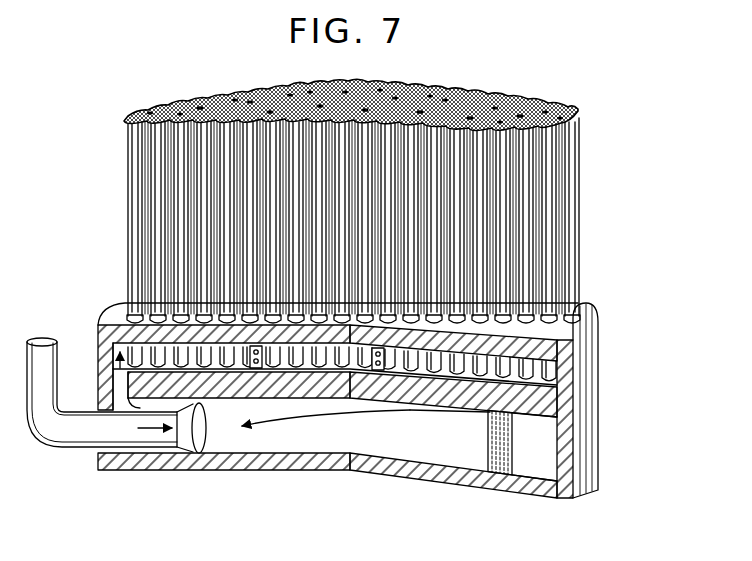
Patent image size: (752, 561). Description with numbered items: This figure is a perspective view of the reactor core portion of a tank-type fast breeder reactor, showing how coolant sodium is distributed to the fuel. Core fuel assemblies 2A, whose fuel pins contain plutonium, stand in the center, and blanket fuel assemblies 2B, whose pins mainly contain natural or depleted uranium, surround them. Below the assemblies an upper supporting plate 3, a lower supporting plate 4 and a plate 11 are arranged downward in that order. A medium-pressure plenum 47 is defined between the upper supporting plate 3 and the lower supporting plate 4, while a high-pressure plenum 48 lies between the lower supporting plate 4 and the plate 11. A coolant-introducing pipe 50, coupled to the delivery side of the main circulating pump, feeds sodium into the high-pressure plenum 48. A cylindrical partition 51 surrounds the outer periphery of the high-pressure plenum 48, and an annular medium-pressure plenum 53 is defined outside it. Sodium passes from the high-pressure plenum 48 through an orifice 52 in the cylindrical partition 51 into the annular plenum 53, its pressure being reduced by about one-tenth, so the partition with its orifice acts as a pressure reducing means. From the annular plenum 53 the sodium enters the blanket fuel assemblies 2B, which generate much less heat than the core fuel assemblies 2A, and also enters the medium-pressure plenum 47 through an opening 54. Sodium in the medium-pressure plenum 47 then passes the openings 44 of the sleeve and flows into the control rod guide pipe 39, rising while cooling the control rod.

The core fuel assembly 2A is at (228, 208).
The blanket fuel assembly 2B is at (485, 222).
The control rod guide pipe 39 is at (380, 248).
The upper supporting plate 3 is at (115, 312).
The lower supporting plate 4 is at (560, 404).
The opening 54 is at (122, 378).
The coolant-introducing pipe 50 is at (70, 447).
The plate 11 is at (213, 470).
The high-pressure plenum 48 is at (290, 435).
The medium-pressure plenum 47 is at (316, 370).
The openings of the sleeve 44 is at (378, 360).
The cylindrical partition 51 is at (487, 457).
The orifice 52 is at (494, 437).
The annular medium-pressure plenum 53 is at (537, 477).